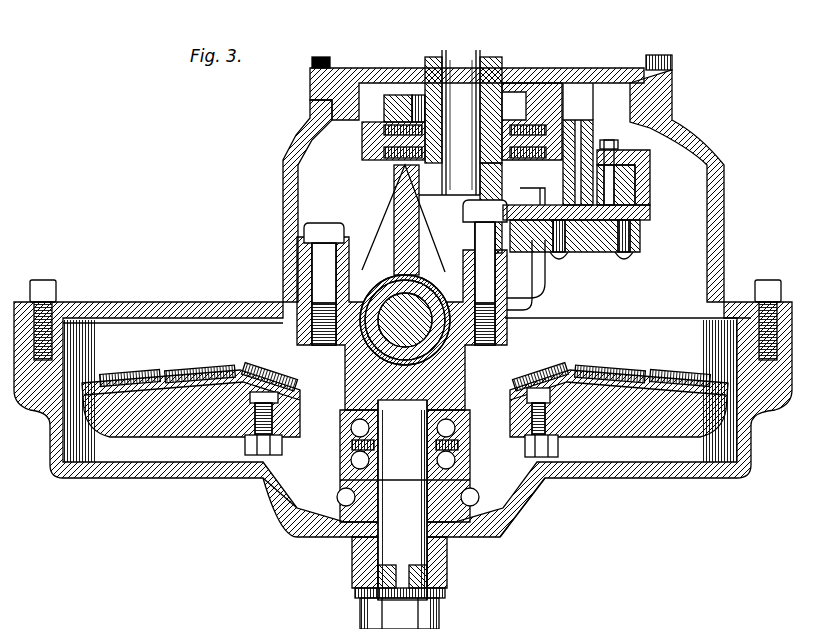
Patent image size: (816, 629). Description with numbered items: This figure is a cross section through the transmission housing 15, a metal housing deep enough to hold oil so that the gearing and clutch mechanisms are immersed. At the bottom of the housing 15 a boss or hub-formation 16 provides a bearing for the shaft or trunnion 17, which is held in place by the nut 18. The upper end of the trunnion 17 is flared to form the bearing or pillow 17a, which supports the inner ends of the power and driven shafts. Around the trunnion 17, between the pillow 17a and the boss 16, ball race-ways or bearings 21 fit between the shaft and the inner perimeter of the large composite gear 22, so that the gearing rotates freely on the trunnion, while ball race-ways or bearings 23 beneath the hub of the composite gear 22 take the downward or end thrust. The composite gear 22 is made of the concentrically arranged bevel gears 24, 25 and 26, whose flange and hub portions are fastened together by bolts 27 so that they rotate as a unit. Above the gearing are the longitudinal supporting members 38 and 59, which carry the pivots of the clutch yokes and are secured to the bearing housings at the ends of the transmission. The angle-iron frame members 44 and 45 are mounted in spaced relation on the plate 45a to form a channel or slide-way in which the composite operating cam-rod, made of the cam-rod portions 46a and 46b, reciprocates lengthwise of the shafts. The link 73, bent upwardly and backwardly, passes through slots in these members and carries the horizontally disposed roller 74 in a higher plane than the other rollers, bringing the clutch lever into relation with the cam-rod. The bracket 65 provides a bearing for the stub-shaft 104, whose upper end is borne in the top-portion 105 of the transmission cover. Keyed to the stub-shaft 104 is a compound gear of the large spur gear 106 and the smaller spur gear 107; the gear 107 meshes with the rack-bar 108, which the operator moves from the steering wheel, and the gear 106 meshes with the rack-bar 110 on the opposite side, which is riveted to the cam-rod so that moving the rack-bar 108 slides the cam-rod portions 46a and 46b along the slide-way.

The housing 15 is at (58, 472).
The boss or hub-formation 16 is at (354, 591).
The shaft or trunnion 17 is at (419, 547).
The bearing or pillow 17a is at (464, 353).
The nut 18 is at (432, 620).
The ball race-ways or bearings 21 is at (525, 500).
The composite gear 22 is at (240, 440).
The ball race-ways or bearings 23 is at (522, 520).
The bevel gear 24 is at (137, 373).
The bevel gear 25 is at (205, 373).
The bevel gear 26 is at (308, 377).
The bolts 27 is at (263, 456).
The frame or supporting member 38 is at (507, 272).
The supporting member or angle iron 44 is at (520, 190).
The supporting member or angle iron 45 is at (632, 195).
The plate 45a is at (644, 228).
The cam-rod portion 46a is at (531, 272).
The cam-rod portion 46b is at (594, 150).
The supporting member 59 is at (302, 254).
The bracket 65 is at (399, 208).
The link 73 is at (644, 148).
The roller 74 is at (620, 165).
The stub-shaft 104 is at (470, 52).
The top-portion of the transmission cover member 105 is at (615, 62).
The spur gear 106 is at (364, 160).
The spur gear 107 is at (506, 102).
The rack-bar 108 is at (394, 95).
The rack-bar 110 is at (597, 117).